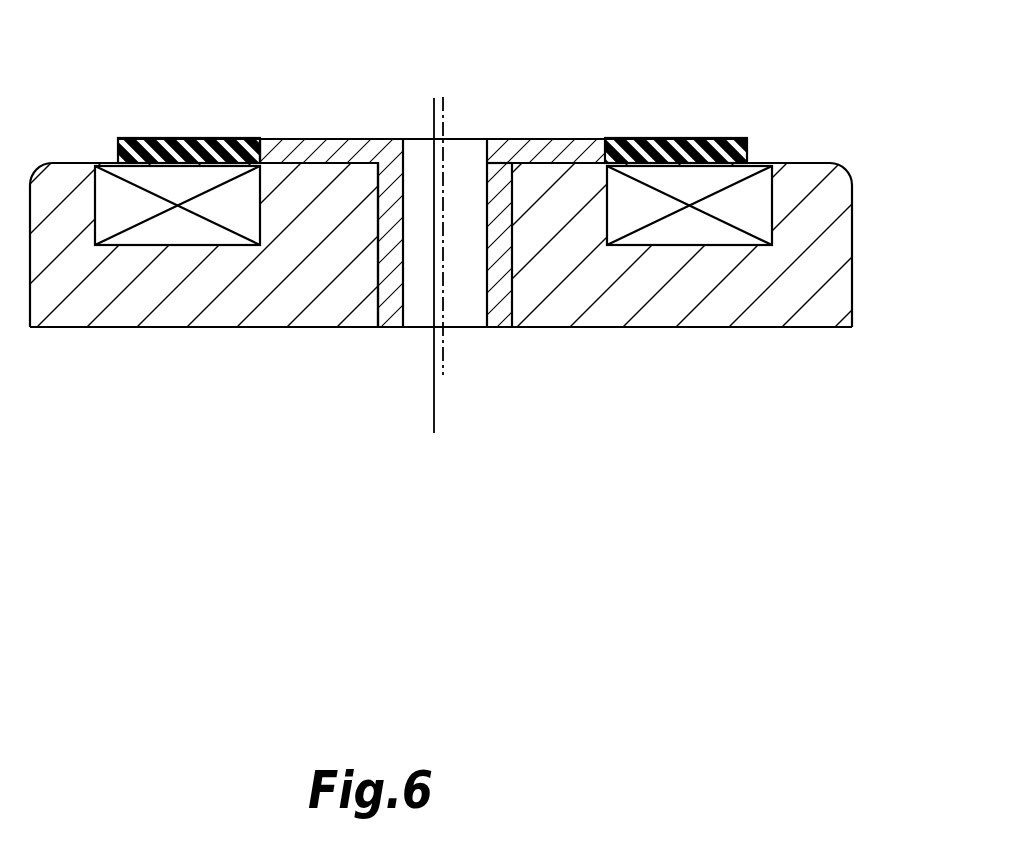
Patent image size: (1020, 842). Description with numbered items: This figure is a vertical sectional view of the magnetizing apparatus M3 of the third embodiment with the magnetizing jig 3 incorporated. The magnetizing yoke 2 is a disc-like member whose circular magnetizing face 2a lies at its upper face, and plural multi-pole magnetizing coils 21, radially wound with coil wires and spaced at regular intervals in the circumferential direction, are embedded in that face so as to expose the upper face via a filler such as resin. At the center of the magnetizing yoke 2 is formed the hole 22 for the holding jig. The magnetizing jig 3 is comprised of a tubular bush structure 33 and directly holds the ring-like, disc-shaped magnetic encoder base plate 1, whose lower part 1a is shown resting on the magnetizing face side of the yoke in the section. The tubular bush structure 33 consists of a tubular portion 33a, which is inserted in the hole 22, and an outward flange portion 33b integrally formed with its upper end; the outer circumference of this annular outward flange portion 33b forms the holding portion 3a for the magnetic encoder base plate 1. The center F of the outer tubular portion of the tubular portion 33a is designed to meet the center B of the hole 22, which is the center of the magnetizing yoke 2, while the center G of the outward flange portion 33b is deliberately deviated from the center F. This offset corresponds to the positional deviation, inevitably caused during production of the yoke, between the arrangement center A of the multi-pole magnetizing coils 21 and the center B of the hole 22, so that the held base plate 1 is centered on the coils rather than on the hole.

The magnetizing apparatus M3 is at (793, 115).
The magnetic encoder base plate 1 is at (703, 138).
The rotor magnet 1a is at (657, 168).
The magnetizing yoke 2 is at (777, 313).
The magnetizing face 2a is at (808, 163).
The multi-pole magnetizing coil 21 is at (760, 210).
The hole for holding jig 22 is at (396, 262).
The magnetizing jig 3 is at (432, 233).
The tubular bush structure 33 is at (513, 277).
The holding portion 3a is at (258, 160).
The tubular portion 33a is at (375, 305).
The outward flange portion 33b is at (362, 138).
The arrangement center of the multi-pole magnetizing coil A is at (388, 299).
The center of the outward flange portion G is at (441, 374).
The center of the hole for holding jig B is at (529, 272).
The center of the outer tubular portion F is at (447, 357).